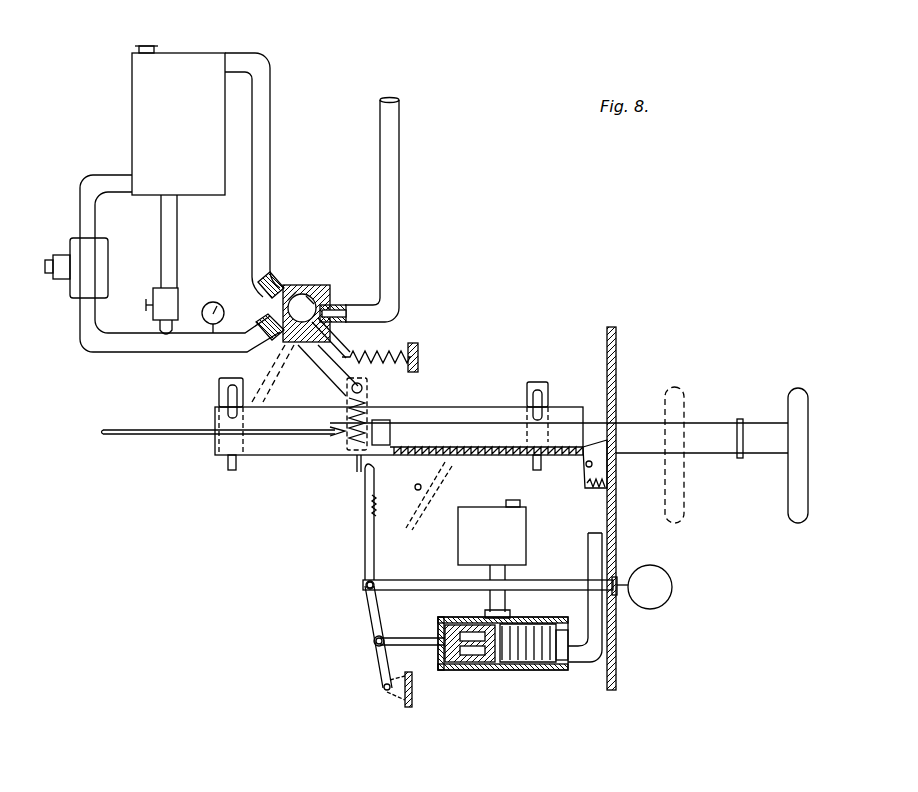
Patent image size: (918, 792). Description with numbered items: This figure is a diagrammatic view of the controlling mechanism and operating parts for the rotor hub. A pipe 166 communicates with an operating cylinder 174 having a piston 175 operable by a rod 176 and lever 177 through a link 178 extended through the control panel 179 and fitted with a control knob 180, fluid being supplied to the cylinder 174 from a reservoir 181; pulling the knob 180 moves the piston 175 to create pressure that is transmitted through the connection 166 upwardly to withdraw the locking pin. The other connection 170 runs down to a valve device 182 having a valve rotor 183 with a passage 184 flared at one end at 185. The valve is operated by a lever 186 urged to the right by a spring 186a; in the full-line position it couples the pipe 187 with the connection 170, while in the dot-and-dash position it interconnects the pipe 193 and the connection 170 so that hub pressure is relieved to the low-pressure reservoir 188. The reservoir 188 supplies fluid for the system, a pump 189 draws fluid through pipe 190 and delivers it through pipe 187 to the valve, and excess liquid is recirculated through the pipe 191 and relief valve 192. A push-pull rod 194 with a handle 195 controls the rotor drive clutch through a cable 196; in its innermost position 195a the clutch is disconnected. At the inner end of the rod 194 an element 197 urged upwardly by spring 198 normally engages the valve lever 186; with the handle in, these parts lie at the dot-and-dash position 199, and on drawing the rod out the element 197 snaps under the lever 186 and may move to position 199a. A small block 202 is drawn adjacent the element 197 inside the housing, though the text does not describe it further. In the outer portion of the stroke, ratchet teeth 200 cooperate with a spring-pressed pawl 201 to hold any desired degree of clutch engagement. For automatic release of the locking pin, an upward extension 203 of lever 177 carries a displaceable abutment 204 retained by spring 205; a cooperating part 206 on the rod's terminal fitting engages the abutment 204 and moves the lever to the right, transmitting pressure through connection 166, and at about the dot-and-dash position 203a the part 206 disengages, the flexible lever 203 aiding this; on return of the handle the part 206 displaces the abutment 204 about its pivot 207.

The pipe 166 is at (588, 553).
The connection 170 is at (392, 129).
The operating cylinder 174 is at (524, 668).
The piston 175 is at (466, 672).
The rod 176 is at (404, 635).
The lever 177 is at (370, 612).
The link 178 is at (436, 580).
The control panel 179 is at (610, 534).
The control knob 180 is at (672, 592).
The reservoir 181 is at (492, 559).
The valve device 182 is at (306, 287).
The valve rotor 183 is at (288, 283).
The passage 184 is at (298, 362).
The flared end 185 is at (332, 300).
The lever 186 is at (334, 352).
The spring 186a is at (406, 356).
The pipe 187 is at (134, 344).
The reservoir 188 is at (178, 120).
The pump 189 is at (96, 248).
The pipe 190 is at (100, 175).
The pipe 191 is at (178, 226).
The relief valve 192 is at (172, 298).
The pipe 193 is at (260, 148).
The push-pull rod 194 is at (622, 420).
The handle 195 is at (790, 395).
The innermost position of handle 195a is at (672, 390).
The cable 196 is at (128, 438).
The element 197 is at (370, 394).
The spring 198 is at (350, 522).
The dot-and-dash position 199 is at (225, 400).
The position 199a is at (532, 395).
The ratchet teeth 200 is at (516, 455).
The spring-pressed pawl 201 is at (584, 477).
The block 202 is at (382, 446).
The upward extension 203 is at (365, 558).
The dot-and-dash position 203a is at (440, 495).
The displaceable abutment 204 is at (356, 490).
The spring 205 is at (390, 513).
The cooperating part 206 is at (347, 473).
The pivot 207 is at (360, 490).